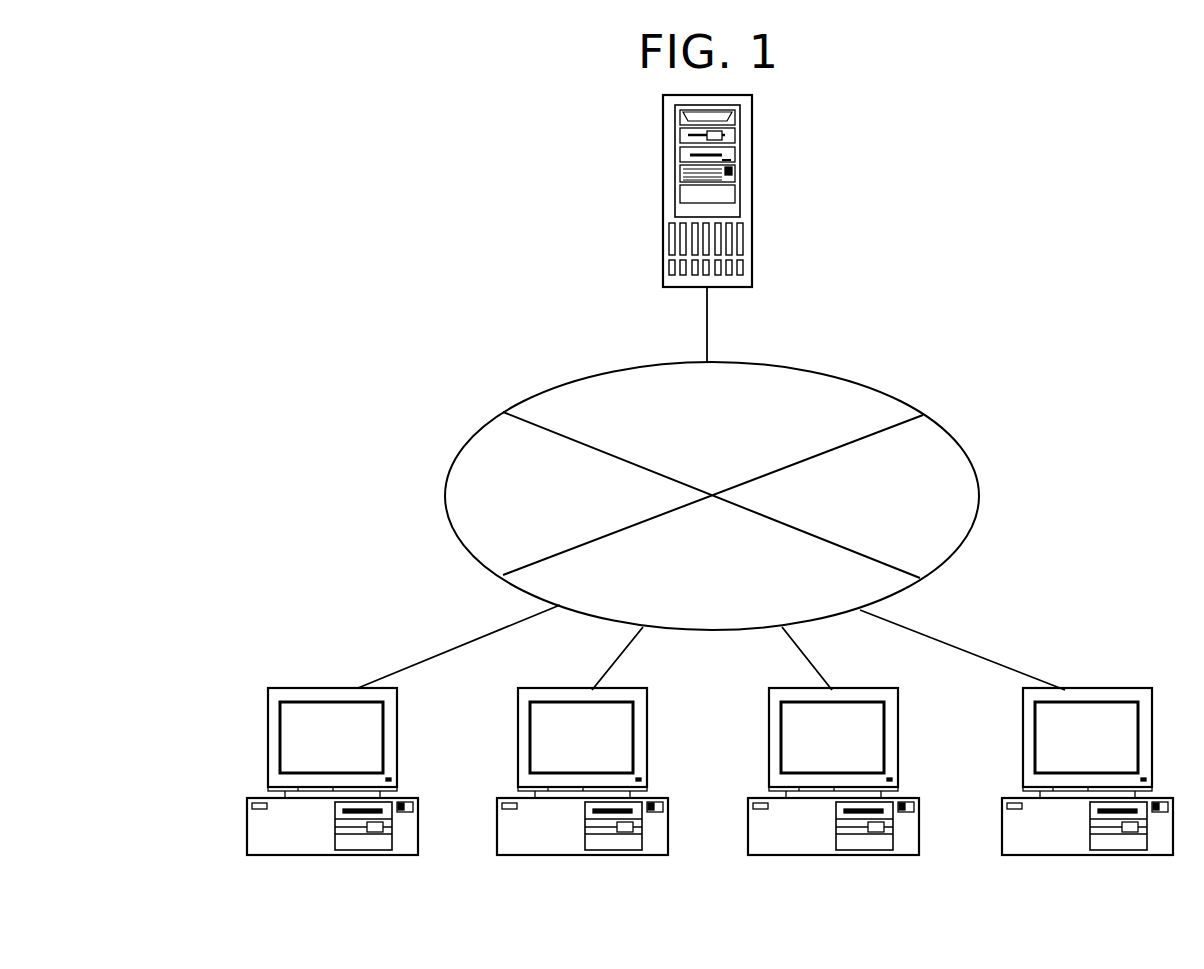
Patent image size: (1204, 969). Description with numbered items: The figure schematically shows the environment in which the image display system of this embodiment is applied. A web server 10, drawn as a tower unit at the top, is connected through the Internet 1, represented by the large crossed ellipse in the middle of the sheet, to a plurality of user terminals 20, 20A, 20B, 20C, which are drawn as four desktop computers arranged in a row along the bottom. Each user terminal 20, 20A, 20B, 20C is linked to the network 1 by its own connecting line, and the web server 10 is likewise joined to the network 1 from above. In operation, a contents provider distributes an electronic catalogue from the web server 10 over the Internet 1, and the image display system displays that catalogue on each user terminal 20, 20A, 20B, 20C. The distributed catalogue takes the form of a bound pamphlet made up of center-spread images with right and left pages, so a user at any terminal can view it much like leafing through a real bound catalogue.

The Internet (network) 1 is at (888, 397).
The web server 10 is at (753, 195).
The user terminal 20 is at (268, 856).
The user terminal 20A is at (519, 857).
The user terminal 20B is at (770, 857).
The user terminal 20C is at (1020, 858).